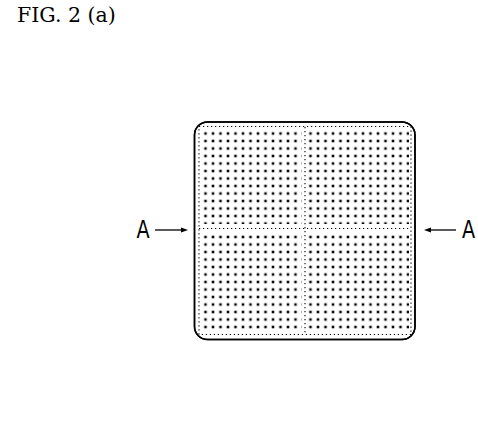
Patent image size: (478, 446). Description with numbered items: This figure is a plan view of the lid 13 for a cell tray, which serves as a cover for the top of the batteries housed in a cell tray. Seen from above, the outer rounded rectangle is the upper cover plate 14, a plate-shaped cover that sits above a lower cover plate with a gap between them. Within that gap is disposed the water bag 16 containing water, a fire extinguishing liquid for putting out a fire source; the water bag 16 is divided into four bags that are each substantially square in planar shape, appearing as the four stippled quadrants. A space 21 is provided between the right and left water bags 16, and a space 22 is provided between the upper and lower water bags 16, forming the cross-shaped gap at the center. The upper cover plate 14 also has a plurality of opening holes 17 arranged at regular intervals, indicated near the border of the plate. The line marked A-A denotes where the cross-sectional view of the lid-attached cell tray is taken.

The light guide plate / flat panel 13 is at (176, 72).
The outer frame edge 14 is at (194, 326).
The light emitting regions 16 is at (246, 137).
The peripheral border 17 is at (414, 145).
The vertical dividing groove 21 is at (306, 129).
The horizontal dividing groove 22 is at (199, 231).